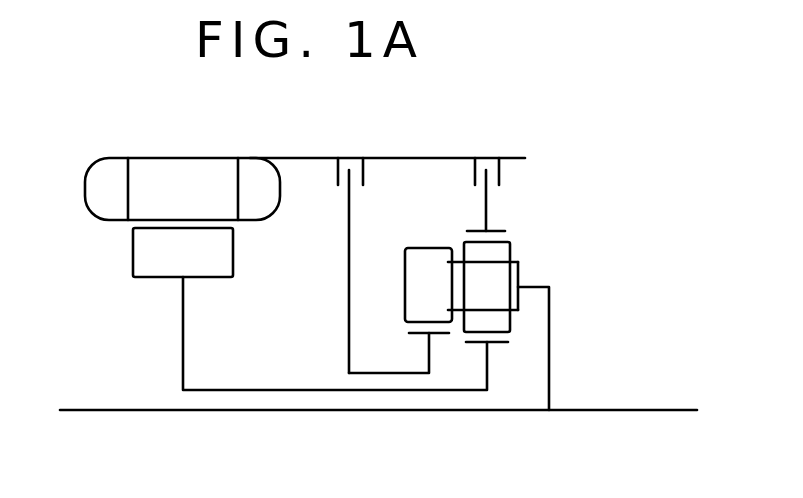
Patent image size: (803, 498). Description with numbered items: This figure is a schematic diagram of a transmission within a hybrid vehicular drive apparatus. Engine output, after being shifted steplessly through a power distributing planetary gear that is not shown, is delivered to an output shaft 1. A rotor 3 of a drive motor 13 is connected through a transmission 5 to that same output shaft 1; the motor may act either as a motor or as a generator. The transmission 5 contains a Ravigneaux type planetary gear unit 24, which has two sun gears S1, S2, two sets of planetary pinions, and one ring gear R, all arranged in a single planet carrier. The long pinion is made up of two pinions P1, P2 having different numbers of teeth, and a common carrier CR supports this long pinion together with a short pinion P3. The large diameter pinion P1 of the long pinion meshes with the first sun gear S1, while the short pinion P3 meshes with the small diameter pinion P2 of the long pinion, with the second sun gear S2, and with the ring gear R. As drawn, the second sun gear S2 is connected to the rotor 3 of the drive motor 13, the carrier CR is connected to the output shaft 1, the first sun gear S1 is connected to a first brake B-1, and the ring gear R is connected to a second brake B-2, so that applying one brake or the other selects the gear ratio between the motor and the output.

The output shaft 1 is at (510, 410).
The rotor 3 is at (142, 256).
The transmission 5 is at (542, 166).
The drive motor 13 is at (193, 155).
The Ravigneaux type planetary gear unit 24 is at (524, 262).
The first brake B-1 is at (344, 247).
The second brake B-2 is at (479, 176).
The first sun gear S1 is at (418, 338).
The second sun gear S2 is at (498, 344).
The large diameter pinion of the long pinion P1 is at (425, 249).
The small diameter pinion of the long pinion P2 is at (493, 262).
The short pinion P3 is at (500, 322).
The ring gear R is at (472, 230).
The carrier CR is at (535, 285).